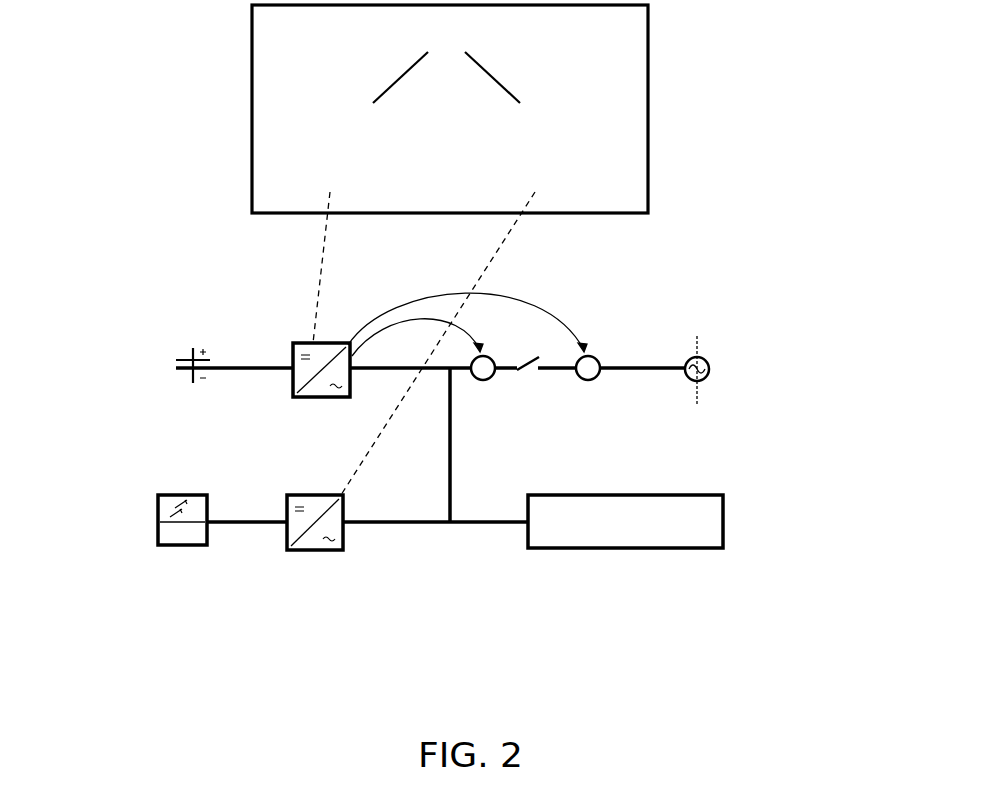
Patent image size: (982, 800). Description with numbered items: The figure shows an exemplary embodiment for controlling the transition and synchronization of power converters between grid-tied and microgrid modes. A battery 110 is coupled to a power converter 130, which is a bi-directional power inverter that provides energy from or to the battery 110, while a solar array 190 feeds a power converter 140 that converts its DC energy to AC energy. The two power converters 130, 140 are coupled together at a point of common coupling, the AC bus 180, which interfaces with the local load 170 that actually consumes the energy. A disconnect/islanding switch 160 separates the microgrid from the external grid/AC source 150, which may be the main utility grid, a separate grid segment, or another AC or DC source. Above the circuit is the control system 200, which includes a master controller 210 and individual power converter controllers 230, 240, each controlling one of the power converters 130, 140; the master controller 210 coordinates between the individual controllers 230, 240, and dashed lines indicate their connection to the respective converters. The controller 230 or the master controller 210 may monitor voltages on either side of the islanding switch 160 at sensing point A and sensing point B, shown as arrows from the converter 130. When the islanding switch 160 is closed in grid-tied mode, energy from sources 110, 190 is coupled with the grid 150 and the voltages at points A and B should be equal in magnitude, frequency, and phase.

The battery 110 is at (160, 358).
The power converter 130 is at (275, 340).
The power converter 140 is at (322, 552).
The external grid/AC source 150 is at (708, 347).
The disconnect/islanding switch 160 is at (520, 380).
The load 170 is at (670, 547).
The AC bus 180 is at (453, 445).
The solar array 190 is at (150, 530).
The control system 200 is at (650, 183).
The master controller 210 is at (440, 63).
The power converter controller 230 is at (344, 227).
The power converter controller 240 is at (484, 303).